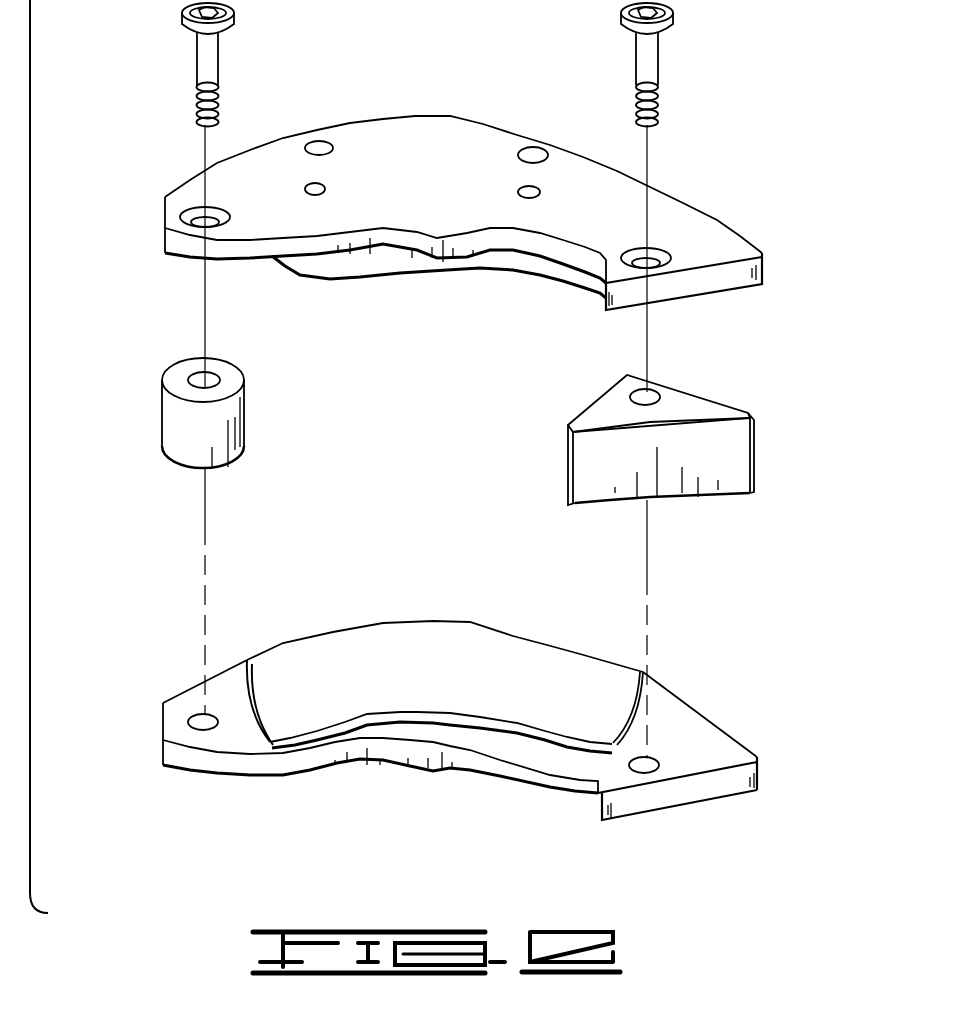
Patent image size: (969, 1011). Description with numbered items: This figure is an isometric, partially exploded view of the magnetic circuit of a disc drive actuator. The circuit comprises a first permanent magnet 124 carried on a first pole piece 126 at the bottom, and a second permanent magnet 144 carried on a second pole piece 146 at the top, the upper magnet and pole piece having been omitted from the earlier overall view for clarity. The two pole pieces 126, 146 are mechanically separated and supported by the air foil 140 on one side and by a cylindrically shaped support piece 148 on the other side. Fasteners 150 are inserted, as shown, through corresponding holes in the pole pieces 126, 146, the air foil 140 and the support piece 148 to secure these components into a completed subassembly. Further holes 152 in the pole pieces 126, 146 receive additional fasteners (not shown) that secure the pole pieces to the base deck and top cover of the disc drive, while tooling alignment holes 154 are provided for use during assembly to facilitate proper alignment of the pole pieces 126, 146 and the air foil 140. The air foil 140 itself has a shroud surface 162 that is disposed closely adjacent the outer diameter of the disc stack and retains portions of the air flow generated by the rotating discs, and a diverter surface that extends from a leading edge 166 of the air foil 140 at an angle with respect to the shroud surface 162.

The fasteners 150 is at (216, 82).
The second pole piece 146 is at (440, 128).
The tooling alignment holes 154 is at (333, 149).
The holes 152 is at (325, 190).
The second permanent magnet 144 is at (510, 263).
The support piece 148 is at (233, 420).
The air foil 140 is at (714, 469).
The leading edge 166 is at (755, 460).
The shroud surface 162 is at (698, 477).
The first permanent magnet 124 is at (428, 642).
The first pole piece 126 is at (683, 733).